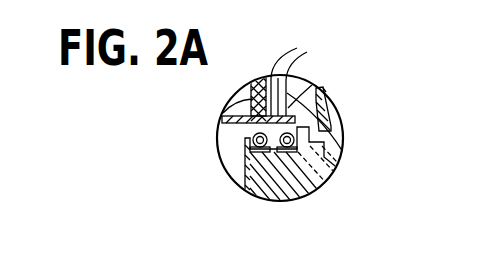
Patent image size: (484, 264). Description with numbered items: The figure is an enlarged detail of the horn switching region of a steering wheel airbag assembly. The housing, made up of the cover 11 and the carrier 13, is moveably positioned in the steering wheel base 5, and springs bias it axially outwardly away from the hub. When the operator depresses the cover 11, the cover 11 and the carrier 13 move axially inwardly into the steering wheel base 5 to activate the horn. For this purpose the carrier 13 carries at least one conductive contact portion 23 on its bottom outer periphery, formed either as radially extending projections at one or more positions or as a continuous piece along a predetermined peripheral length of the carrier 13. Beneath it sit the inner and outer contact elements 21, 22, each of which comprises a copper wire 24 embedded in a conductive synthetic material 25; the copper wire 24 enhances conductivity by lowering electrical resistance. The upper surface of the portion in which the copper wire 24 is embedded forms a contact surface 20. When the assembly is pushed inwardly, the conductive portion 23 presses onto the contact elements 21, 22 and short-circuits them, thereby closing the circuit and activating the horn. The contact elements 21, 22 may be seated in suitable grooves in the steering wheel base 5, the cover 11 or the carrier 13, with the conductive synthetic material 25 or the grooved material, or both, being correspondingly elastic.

The steering wheel base 5 is at (343, 140).
The cover 11 is at (342, 120).
The carrier 13 is at (253, 80).
The contact surface 20 is at (306, 77).
The inner contact element 21 is at (258, 185).
The outer contact element 22 is at (297, 185).
The conductive contact portion 23 is at (313, 84).
The copper wire 24 is at (253, 141).
The conductive synthetic material 25 is at (280, 150).